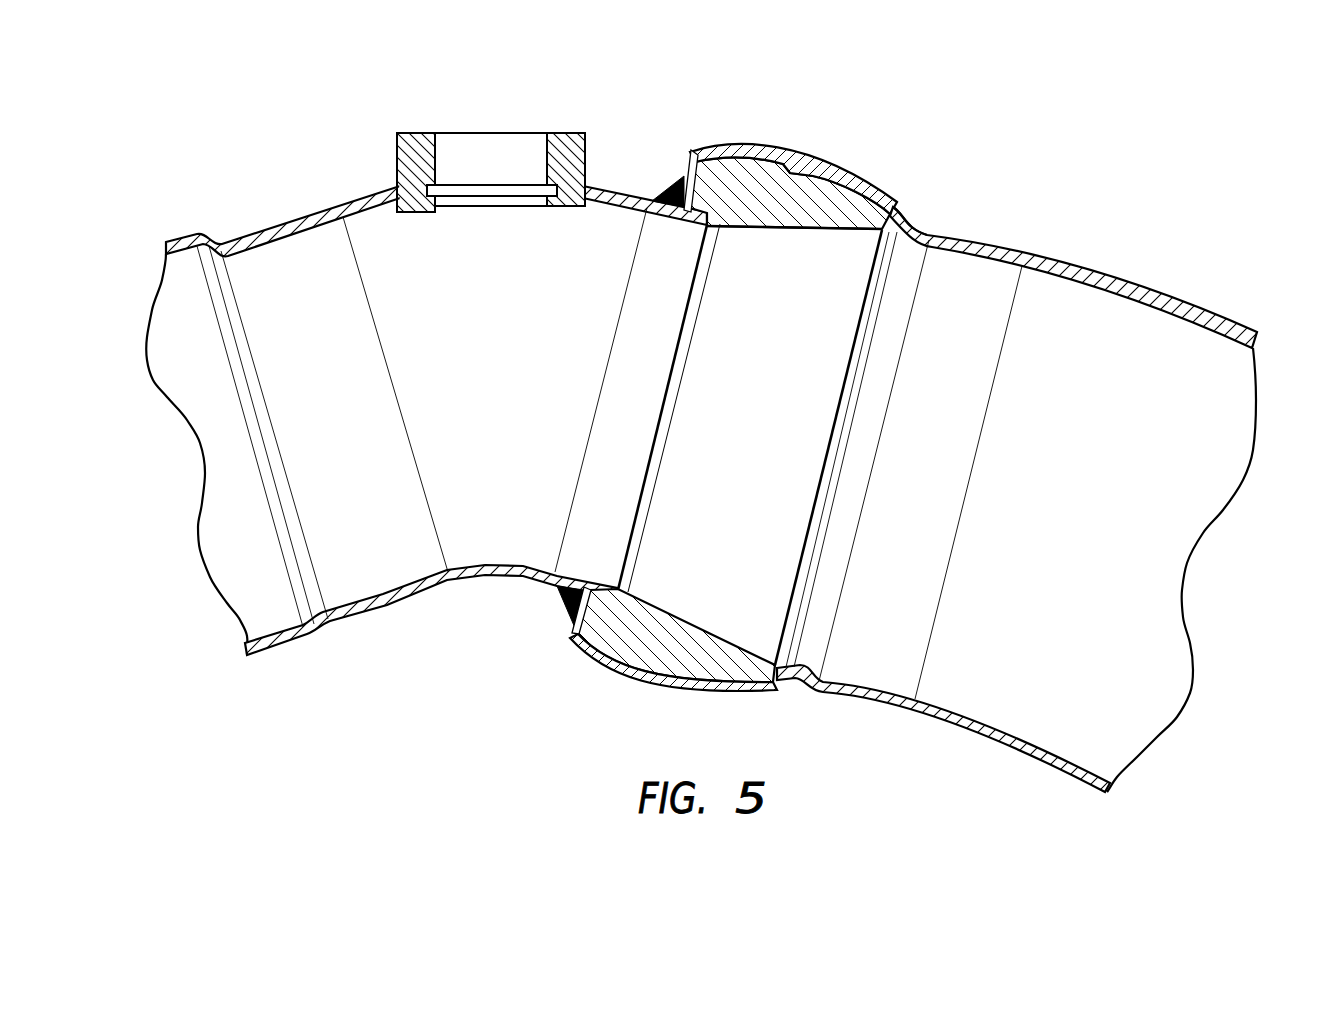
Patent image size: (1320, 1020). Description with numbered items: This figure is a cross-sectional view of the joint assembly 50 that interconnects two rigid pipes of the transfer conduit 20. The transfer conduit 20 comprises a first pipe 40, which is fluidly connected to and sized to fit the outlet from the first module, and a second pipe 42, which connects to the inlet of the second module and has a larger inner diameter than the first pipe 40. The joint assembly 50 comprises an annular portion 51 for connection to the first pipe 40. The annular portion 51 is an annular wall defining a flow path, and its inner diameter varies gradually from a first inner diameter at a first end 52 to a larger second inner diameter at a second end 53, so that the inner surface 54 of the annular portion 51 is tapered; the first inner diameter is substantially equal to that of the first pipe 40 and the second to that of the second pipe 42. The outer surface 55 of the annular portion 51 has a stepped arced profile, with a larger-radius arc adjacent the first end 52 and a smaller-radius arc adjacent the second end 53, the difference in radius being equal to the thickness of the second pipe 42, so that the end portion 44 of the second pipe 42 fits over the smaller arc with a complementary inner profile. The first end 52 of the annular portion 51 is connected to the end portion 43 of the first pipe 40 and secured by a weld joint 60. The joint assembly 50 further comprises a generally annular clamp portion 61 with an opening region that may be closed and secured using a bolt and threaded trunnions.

The transfer conduit 20 is at (1038, 94).
The first pipe 40 is at (284, 215).
The second pipe 42 is at (1152, 289).
The end portion of the first pipe 43 is at (672, 217).
The end portion of the second pipe 44 is at (906, 214).
The joint assembly 50 is at (726, 406).
The annular portion 51 is at (808, 247).
The first end of the annular portion 52 is at (686, 175).
The second end of the annular portion 53 is at (882, 233).
The inner surface of the annular portion 54 is at (760, 228).
The outer surface of the annular portion 55 is at (812, 172).
The weld joint 60 is at (556, 583).
The clamp portion 61 is at (680, 692).